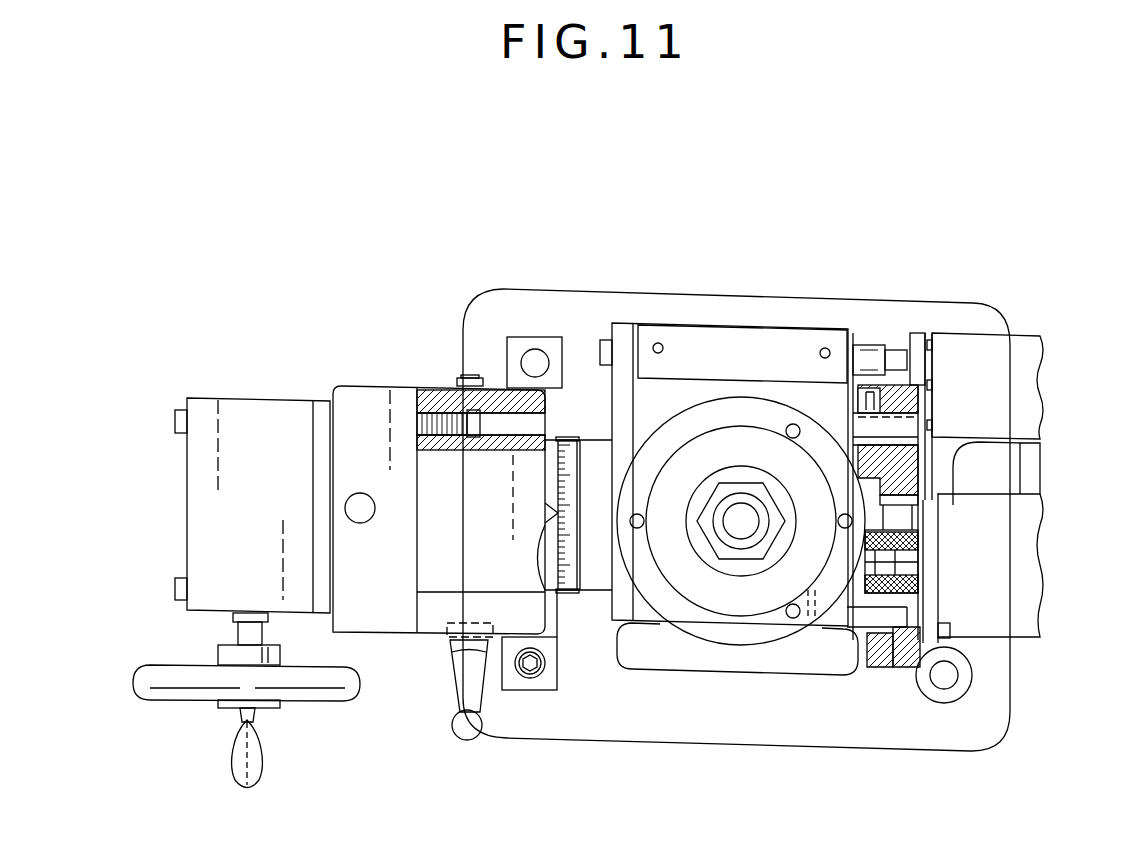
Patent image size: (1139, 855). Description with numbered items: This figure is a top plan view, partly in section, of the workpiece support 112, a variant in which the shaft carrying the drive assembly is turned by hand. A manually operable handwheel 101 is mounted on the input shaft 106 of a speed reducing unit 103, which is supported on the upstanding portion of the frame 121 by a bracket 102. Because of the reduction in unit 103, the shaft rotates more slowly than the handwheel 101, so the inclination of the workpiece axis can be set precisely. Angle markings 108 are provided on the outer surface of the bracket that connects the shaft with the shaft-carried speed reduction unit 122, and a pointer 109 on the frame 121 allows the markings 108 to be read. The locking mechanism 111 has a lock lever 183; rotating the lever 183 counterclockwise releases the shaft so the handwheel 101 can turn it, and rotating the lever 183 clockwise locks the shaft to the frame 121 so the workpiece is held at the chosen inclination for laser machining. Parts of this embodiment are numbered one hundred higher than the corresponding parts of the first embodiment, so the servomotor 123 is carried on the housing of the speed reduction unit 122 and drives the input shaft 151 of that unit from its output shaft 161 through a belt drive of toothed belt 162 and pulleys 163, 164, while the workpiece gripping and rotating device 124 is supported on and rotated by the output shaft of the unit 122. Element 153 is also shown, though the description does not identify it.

The handwheel 101 is at (140, 706).
The bracket 102 is at (363, 386).
The speed reducing unit 103 is at (199, 394).
The input shaft 106 is at (236, 634).
The angle markings 108 is at (567, 437).
The pointer 109 is at (547, 557).
The locking mechanism 111 is at (443, 640).
The workpiece support 112 is at (633, 284).
The frame 121 is at (540, 740).
The shaft-carried speed reduction unit 122 is at (715, 326).
The servomotor 123 is at (1043, 490).
The workpiece gripping and rotating device 124 is at (692, 631).
The input shaft of the speed reduction unit 151 is at (850, 432).
The cover plate 153 is at (665, 323).
The output shaft of the servomotor 161 is at (915, 560).
The toothed belt 162 is at (950, 470).
The pulley 163 is at (905, 622).
The pulley 164 is at (928, 412).
The lock lever 183 is at (467, 741).